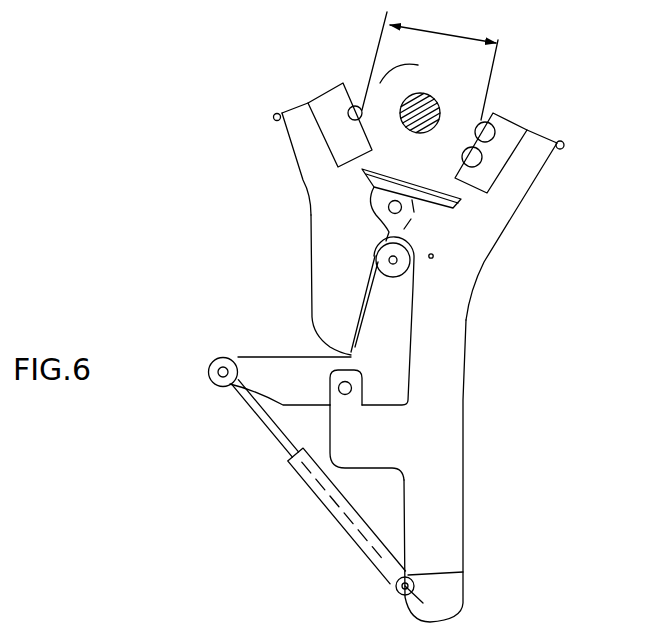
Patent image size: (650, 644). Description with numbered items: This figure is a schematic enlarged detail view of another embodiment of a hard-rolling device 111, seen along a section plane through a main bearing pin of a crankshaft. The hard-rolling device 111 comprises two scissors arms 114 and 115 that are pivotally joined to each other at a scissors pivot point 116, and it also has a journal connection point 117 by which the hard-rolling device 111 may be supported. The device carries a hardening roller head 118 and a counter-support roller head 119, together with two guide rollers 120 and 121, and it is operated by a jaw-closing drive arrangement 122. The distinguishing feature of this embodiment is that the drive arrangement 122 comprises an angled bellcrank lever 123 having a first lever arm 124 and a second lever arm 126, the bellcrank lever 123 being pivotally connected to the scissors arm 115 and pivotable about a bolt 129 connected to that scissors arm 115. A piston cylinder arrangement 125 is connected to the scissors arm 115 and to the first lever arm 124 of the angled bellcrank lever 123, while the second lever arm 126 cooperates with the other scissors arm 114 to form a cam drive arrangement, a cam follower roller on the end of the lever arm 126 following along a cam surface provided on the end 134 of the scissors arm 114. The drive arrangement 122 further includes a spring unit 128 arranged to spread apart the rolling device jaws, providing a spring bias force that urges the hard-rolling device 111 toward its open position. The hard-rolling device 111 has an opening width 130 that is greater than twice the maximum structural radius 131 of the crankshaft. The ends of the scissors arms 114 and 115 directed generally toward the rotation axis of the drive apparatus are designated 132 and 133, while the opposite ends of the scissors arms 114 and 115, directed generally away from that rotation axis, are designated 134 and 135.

The hard-rolling device 111 is at (473, 337).
The scissors arm 114 is at (284, 106).
The scissors arm 115 is at (552, 131).
The scissors pivot point 116 is at (402, 208).
The journal connection point 117 is at (434, 256).
The hardening roller head 118 is at (322, 82).
The counter-support roller head 119 is at (517, 114).
The guide roller 120 is at (273, 117).
The guide roller 121 is at (565, 145).
The jaw-closing drive arrangement 122 is at (243, 417).
The angled bellcrank lever 123 is at (219, 355).
The first lever arm 124 is at (275, 372).
The piston cylinder arrangement 125 is at (316, 499).
The second lever arm 126 is at (407, 317).
The spring unit 128 is at (425, 172).
The bolt 129 is at (345, 395).
The opening width 130 is at (441, 28).
The structural radius 131 is at (402, 70).
The end of scissors arm 132 is at (314, 166).
The end of scissors arm 133 is at (513, 216).
The end of scissors arm 134 is at (323, 268).
The end of scissors arm 135 is at (456, 438).